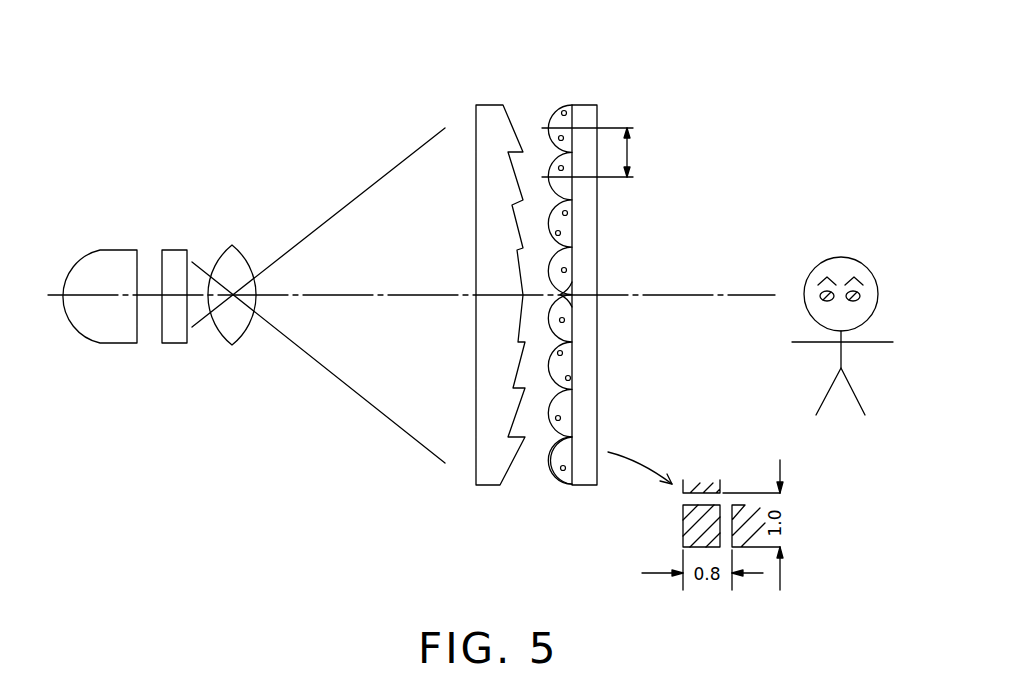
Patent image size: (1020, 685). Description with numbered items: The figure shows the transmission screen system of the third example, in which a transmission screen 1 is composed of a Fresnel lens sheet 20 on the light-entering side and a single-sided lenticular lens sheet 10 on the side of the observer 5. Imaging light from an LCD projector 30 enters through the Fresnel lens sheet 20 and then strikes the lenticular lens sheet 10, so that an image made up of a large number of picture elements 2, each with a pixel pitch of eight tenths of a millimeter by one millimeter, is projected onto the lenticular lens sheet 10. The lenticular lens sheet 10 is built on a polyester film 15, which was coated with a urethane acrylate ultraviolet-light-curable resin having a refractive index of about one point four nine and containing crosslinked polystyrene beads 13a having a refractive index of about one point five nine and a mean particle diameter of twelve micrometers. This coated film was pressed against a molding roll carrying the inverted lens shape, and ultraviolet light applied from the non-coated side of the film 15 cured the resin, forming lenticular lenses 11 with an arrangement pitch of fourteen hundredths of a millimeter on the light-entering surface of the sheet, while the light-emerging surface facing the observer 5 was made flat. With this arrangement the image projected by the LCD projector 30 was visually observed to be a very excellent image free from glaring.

The transmission screen 1 is at (527, 93).
The picture element 2 is at (710, 508).
The observer 5 is at (880, 307).
The lenticular lens sheet 10 is at (599, 343).
The lenticular lenses 11 is at (560, 295).
The crosslinked polystyrene beads 13a is at (559, 477).
The polyester film 15 is at (585, 243).
The Fresnel lens sheet 20 is at (492, 363).
The LCD projector 30 is at (73, 358).